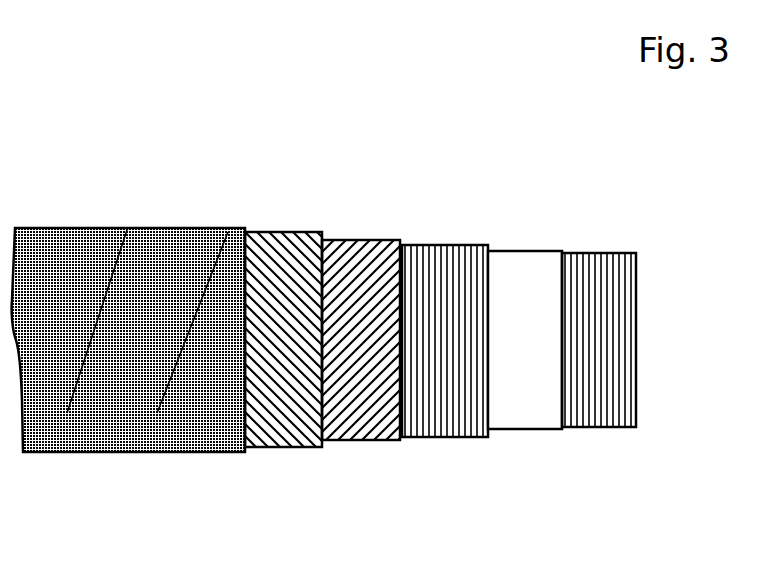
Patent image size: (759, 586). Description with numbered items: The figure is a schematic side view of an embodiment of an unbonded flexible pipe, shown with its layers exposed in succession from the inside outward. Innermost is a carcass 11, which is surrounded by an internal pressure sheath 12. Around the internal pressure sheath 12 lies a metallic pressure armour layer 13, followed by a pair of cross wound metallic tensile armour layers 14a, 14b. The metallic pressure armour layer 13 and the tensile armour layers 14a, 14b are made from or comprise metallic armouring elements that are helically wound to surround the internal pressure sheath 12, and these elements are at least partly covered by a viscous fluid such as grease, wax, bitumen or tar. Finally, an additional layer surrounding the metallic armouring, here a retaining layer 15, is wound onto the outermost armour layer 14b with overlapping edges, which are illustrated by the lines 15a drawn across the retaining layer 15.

The carcass 11 is at (612, 410).
The internal pressure sheath 12 is at (533, 409).
The metallic pressure armour layer 13 is at (453, 412).
The metallic tensile armour layer 14a is at (357, 256).
The metallic tensile armour layer 14b is at (278, 251).
The retaining layer 15 is at (177, 240).
The lines 15a is at (65, 411).